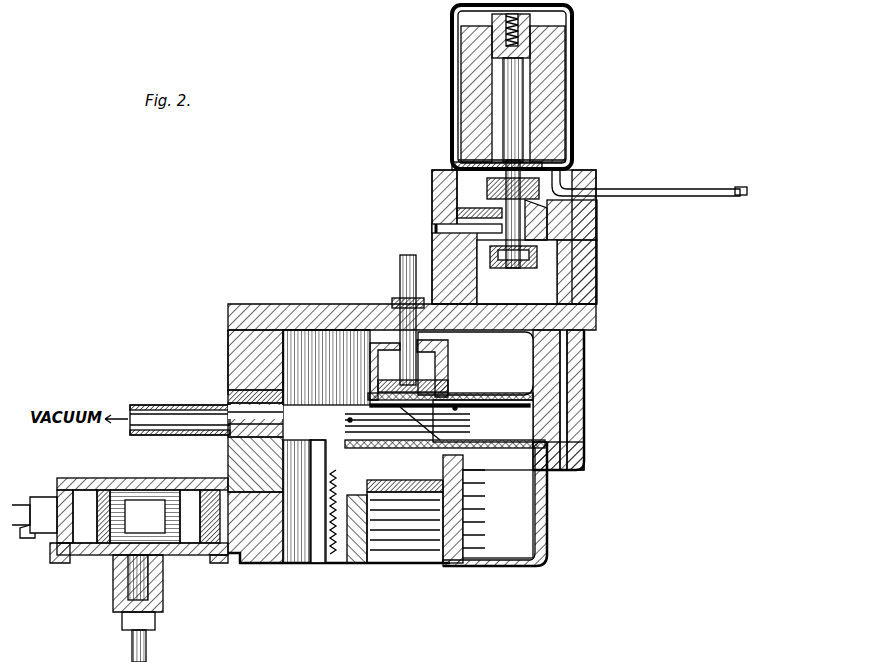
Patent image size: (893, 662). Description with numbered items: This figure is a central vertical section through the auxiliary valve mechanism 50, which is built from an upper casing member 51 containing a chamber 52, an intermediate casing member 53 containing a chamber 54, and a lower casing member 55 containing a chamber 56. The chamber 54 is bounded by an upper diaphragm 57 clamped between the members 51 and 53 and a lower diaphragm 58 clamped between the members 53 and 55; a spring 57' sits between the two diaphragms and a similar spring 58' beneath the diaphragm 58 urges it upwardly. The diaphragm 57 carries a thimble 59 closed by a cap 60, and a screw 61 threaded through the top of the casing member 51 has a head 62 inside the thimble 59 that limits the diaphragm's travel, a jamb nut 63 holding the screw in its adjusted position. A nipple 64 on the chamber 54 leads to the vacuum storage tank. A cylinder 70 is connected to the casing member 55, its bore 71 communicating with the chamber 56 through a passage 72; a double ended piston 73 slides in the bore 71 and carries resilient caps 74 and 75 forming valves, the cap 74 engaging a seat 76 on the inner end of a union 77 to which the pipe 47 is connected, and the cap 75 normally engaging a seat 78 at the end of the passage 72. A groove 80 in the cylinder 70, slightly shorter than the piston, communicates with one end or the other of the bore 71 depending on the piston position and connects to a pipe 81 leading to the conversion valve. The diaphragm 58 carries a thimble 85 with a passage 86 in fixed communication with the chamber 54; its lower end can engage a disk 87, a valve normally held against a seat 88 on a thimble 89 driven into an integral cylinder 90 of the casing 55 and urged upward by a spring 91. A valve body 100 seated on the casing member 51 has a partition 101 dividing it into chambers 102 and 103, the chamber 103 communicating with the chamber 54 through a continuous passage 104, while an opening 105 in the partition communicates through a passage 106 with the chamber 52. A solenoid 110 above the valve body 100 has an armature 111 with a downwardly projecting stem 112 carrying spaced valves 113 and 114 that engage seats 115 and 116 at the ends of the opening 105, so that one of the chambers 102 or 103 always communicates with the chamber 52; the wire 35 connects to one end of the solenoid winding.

The wire 35 is at (688, 189).
The pipe 47 is at (28, 538).
The auxiliary valve mechanism 50 is at (230, 306).
The upper casing member 51 is at (290, 305).
The chamber 52 is at (475, 363).
The intermediate casing member 53 is at (562, 432).
The chamber 54 is at (437, 418).
The lower casing member 55 is at (540, 520).
The chamber 56 is at (527, 500).
The upper diaphragm 57 is at (450, 383).
The spring 57' is at (445, 436).
The lower diaphragm 58 is at (498, 505).
The spring 58' is at (496, 509).
The thimble 59 is at (468, 407).
The cap 60 is at (447, 352).
The screw 61 is at (400, 262).
The head 62 is at (378, 372).
The jamb nut 63 is at (392, 302).
The nipple 64 is at (170, 405).
The cylinder 70 is at (152, 480).
The bore 71 is at (85, 492).
The passage 72 is at (245, 555).
The double ended piston 73 is at (186, 495).
The resilient cap 74 is at (104, 492).
The resilient cap 75 is at (212, 480).
The seat 76 is at (65, 563).
The union 77 is at (45, 497).
The seat 78 is at (215, 558).
The groove 80 is at (108, 555).
The pipe 81 is at (147, 652).
The thimble 85 is at (347, 419).
The passage 86 is at (445, 432).
The disk 87 is at (478, 492).
The seat 88 is at (325, 507).
The thimble 89 is at (452, 565).
The integral cylinder 90 is at (480, 530).
The spring 91 is at (406, 540).
The valve body 100 is at (597, 264).
The partition 101 is at (562, 228).
The chamber 102 is at (468, 190).
The chamber 103 is at (556, 282).
The continuous passage 104 is at (562, 350).
The opening 105 is at (535, 226).
The passage 106 is at (440, 222).
The solenoid 110 is at (556, 80).
The armature 111 is at (498, 95).
The stem 112 is at (513, 268).
The valve 113 is at (487, 185).
The valve 114 is at (494, 256).
The seat 115 is at (500, 210).
The seat 116 is at (598, 242).